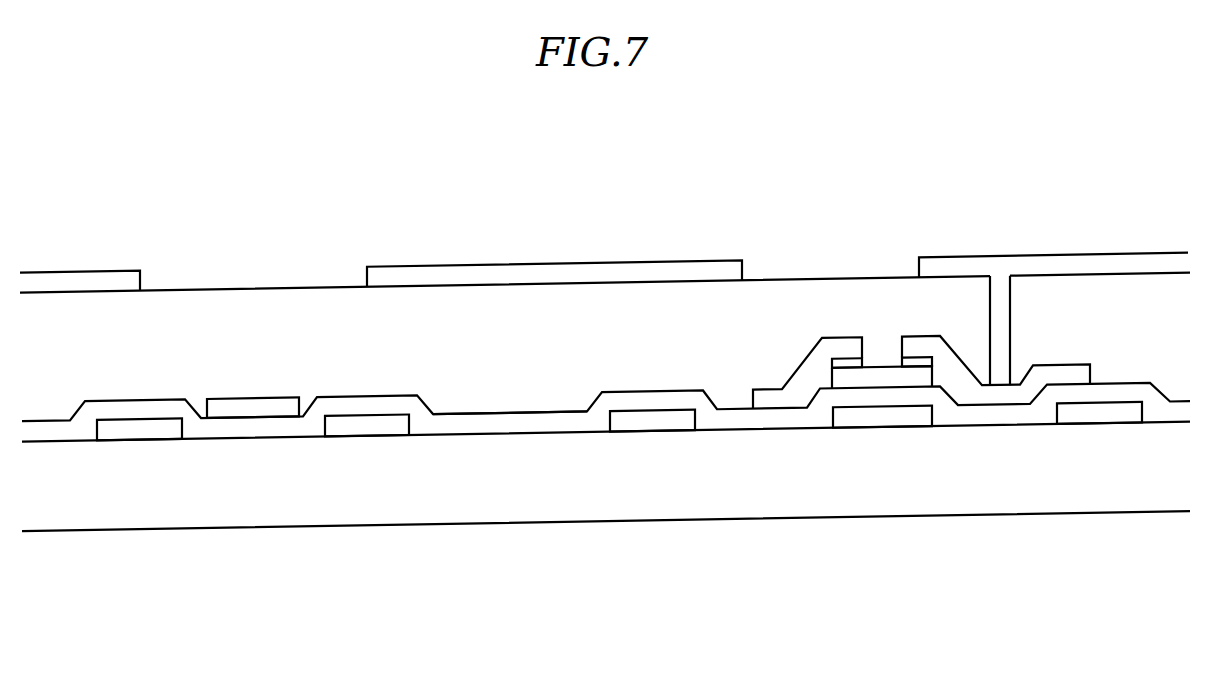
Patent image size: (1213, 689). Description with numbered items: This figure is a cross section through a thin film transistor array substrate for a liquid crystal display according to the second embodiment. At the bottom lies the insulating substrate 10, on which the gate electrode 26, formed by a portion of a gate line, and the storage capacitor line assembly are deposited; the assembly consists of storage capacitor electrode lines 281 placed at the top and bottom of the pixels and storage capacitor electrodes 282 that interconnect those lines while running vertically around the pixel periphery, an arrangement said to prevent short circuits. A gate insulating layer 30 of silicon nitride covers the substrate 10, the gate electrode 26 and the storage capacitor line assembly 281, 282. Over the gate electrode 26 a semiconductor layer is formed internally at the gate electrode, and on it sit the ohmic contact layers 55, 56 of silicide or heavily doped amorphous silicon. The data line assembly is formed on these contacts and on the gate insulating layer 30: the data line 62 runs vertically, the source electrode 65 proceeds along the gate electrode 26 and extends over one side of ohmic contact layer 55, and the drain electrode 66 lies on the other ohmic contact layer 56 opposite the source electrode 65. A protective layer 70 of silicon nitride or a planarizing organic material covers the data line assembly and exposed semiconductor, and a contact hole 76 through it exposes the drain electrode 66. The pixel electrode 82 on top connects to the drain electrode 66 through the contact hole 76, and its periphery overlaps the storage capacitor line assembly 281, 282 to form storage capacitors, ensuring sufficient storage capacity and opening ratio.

The insulating substrate 10 is at (687, 503).
The gate electrode 26 is at (885, 418).
The gate insulating layer 30 is at (547, 422).
The ohmic contact layer 55 is at (912, 360).
The ohmic contact layer 56 is at (845, 362).
The data line 62 is at (252, 412).
The source electrode 65 is at (995, 398).
The drain electrode 66 is at (778, 402).
The protective layer 70 is at (475, 395).
The contact hole 76 is at (1000, 289).
The pixel electrode 82 is at (80, 280).
The storage capacitor electrode line 281 is at (620, 423).
The storage capacitor electrode 282 is at (143, 430).